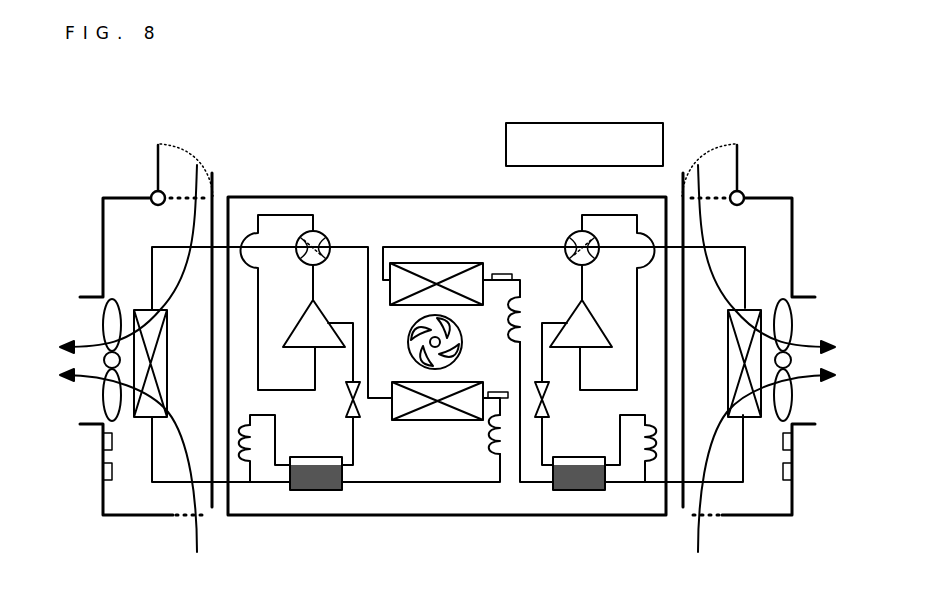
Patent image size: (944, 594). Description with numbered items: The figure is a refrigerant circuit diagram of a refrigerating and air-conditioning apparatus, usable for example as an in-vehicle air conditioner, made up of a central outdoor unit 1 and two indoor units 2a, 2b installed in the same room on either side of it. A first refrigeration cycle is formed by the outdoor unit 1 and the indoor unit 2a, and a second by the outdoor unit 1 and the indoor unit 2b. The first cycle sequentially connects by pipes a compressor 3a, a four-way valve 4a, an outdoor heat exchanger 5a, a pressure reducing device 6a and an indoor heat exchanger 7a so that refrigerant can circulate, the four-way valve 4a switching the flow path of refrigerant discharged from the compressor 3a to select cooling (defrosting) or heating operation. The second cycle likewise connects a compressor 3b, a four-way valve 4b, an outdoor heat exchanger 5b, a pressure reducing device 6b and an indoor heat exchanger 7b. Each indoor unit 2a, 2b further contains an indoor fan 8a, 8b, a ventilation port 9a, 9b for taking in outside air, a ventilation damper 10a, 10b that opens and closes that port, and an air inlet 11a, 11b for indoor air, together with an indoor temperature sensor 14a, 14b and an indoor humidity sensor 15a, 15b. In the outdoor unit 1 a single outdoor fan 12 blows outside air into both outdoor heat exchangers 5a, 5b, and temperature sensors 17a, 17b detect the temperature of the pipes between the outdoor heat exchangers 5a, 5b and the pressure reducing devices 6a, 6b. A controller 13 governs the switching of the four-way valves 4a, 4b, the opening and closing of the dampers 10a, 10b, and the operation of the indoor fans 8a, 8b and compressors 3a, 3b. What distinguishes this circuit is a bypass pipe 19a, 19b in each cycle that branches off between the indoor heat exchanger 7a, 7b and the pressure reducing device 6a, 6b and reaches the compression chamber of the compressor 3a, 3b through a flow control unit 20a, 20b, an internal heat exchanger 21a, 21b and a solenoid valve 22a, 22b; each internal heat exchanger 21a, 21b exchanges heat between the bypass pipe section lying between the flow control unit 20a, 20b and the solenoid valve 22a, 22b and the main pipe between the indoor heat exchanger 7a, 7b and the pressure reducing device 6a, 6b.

The outdoor unit 1 is at (400, 197).
The indoor unit 2a is at (103, 240).
The indoor unit 2b is at (793, 232).
The compressor 3a is at (303, 325).
The compressor 3b is at (598, 324).
The four-way valve 4a is at (327, 237).
The four-way valve 4b is at (573, 232).
The outdoor heat exchanger 5a is at (441, 420).
The outdoor heat exchanger 5b is at (441, 272).
The pressure reducing device 6a is at (494, 447).
The pressure reducing device 6b is at (527, 302).
The indoor heat exchanger 7a is at (147, 310).
The indoor heat exchanger 7b is at (748, 312).
The indoor fan 8a is at (101, 300).
The indoor fan 8b is at (791, 326).
The ventilation port 9a is at (207, 200).
The ventilation port 9b is at (716, 202).
The ventilation damper 10a is at (152, 190).
The ventilation damper 10b is at (741, 175).
The air inlet 11a is at (190, 517).
The air inlet 11b is at (720, 518).
The outdoor fan 12 is at (410, 338).
The controller 13 is at (665, 145).
The indoor temperature sensor 14a is at (103, 442).
The indoor temperature sensor 14b is at (795, 438).
The indoor humidity sensor 15a is at (103, 472).
The indoor humidity sensor 15b is at (795, 468).
The temperature sensor 17a is at (492, 391).
The temperature sensor 17b is at (500, 273).
The bypass pipe 19a is at (276, 433).
The bypass pipe 19b is at (617, 447).
The flow control unit 20a is at (252, 464).
The flow control unit 20b is at (644, 466).
The internal heat exchanger 21a is at (316, 491).
The internal heat exchanger 21b is at (576, 491).
The solenoid valve 22a is at (356, 418).
The solenoid valve 22b is at (546, 378).